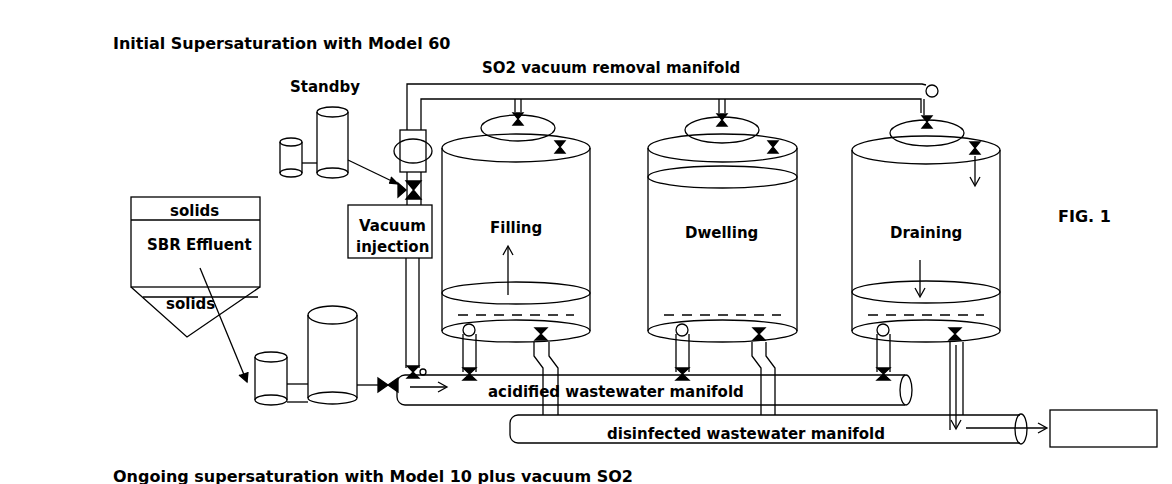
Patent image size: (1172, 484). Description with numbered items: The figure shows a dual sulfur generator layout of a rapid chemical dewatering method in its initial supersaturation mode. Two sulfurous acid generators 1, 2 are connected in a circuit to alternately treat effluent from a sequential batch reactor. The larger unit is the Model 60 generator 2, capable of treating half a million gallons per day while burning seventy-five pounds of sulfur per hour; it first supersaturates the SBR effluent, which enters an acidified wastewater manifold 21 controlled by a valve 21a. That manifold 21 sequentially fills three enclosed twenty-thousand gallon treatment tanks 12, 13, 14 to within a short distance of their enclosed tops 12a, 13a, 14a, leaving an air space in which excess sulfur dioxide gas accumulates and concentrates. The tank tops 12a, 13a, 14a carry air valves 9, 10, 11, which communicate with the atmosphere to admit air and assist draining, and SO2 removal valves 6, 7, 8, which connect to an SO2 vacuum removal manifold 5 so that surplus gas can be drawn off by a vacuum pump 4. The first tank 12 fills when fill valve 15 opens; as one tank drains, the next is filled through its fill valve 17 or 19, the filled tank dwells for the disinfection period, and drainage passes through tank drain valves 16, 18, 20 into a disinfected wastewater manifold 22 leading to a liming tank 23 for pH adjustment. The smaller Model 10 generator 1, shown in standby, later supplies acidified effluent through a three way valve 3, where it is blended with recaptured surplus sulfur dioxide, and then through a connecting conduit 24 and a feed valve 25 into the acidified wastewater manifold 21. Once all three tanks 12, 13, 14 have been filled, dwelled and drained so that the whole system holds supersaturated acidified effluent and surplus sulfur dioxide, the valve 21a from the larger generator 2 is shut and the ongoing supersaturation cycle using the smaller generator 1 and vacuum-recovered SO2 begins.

The sulfurous acid generator 1 is at (287, 158).
The sulfurous acid generator 2 is at (270, 386).
The three way valve 3 is at (398, 188).
The vacuum pump 4 is at (410, 152).
The SO2 vacuum removal manifold 5 is at (468, 90).
The SO2 removal valve 6 is at (527, 122).
The SO2 removal valve 7 is at (730, 121).
The SO2 removal valve 8 is at (932, 123).
The air valve 9 is at (568, 145).
The air valve 10 is at (778, 146).
The air valve 11 is at (985, 146).
The treatment tank 12 is at (516, 238).
The tank top 12a is at (472, 143).
The treatment tank 13 is at (722, 238).
The tank top 13a is at (683, 145).
The treatment tank 14 is at (926, 239).
The tank top 14a is at (885, 145).
The fill valve 15 is at (463, 372).
The tank drain valve 16 is at (548, 340).
The fill valve 17 is at (674, 373).
The tank drain valve 18 is at (766, 340).
The fill valve 19 is at (875, 372).
The tank drain valve 20 is at (962, 338).
The acidified wastewater manifold 21 is at (436, 398).
The valve 21a is at (397, 394).
The disinfected wastewater manifold 22 is at (836, 443).
The liming tank 23 is at (1090, 415).
The connecting conduit 24 is at (410, 300).
The feed valve 25 is at (408, 370).
The Model 60 sulfurous acid generator 60 is at (332, 355).